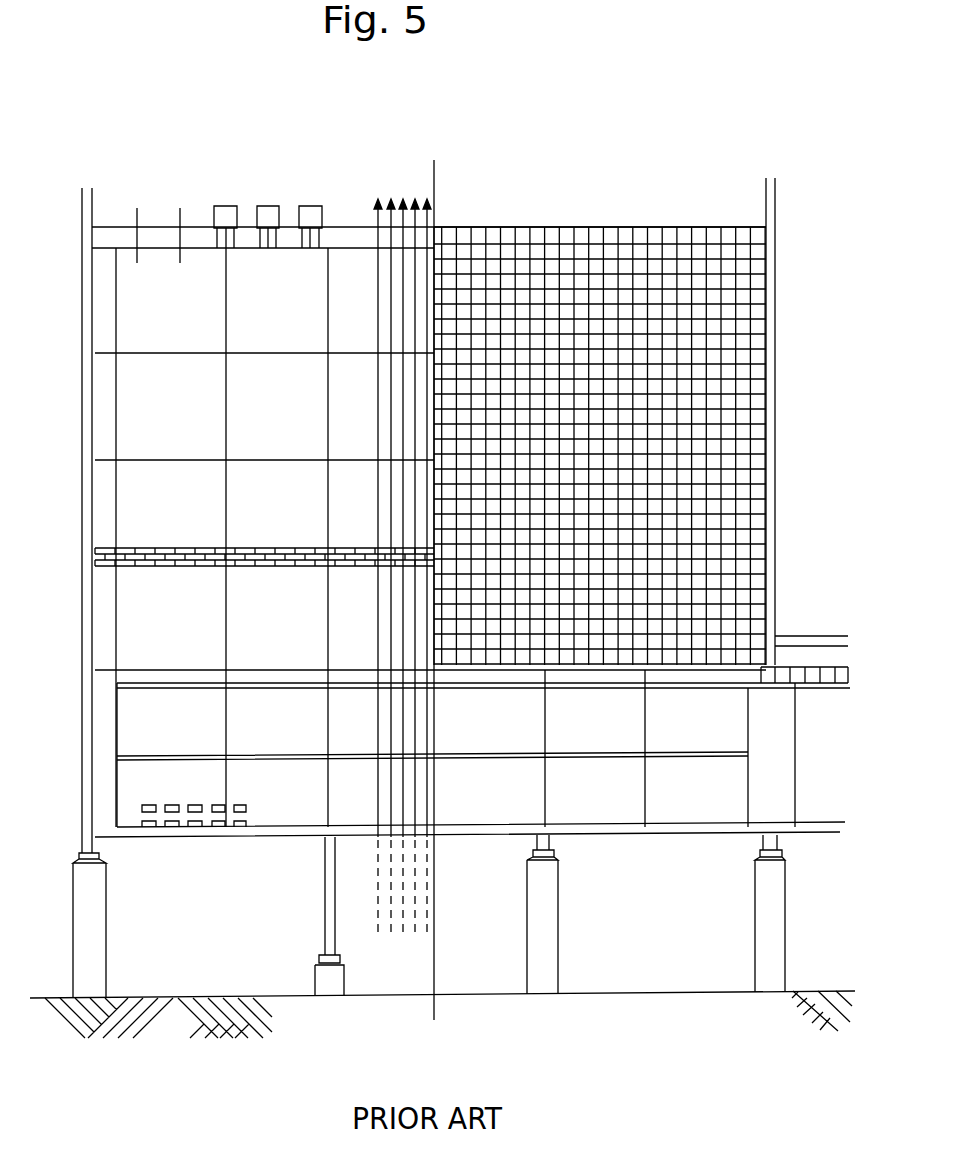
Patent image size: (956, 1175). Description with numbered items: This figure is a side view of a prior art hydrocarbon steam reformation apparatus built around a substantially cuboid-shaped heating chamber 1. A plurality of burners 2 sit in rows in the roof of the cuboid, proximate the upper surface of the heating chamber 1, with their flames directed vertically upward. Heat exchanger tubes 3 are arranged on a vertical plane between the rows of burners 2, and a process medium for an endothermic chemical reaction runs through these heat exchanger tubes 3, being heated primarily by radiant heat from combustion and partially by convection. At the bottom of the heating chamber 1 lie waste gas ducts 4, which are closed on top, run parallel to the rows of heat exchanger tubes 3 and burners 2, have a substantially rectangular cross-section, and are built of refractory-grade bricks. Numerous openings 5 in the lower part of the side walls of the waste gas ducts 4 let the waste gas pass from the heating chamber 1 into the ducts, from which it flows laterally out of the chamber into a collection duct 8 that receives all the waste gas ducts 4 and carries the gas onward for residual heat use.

The heating chamber 1 is at (161, 285).
The burners 2 is at (228, 216).
The heat exchanger tubes 3 is at (380, 200).
The waste gas ducts 4 is at (143, 716).
The openings 5 is at (192, 803).
The collection duct 8 is at (810, 753).